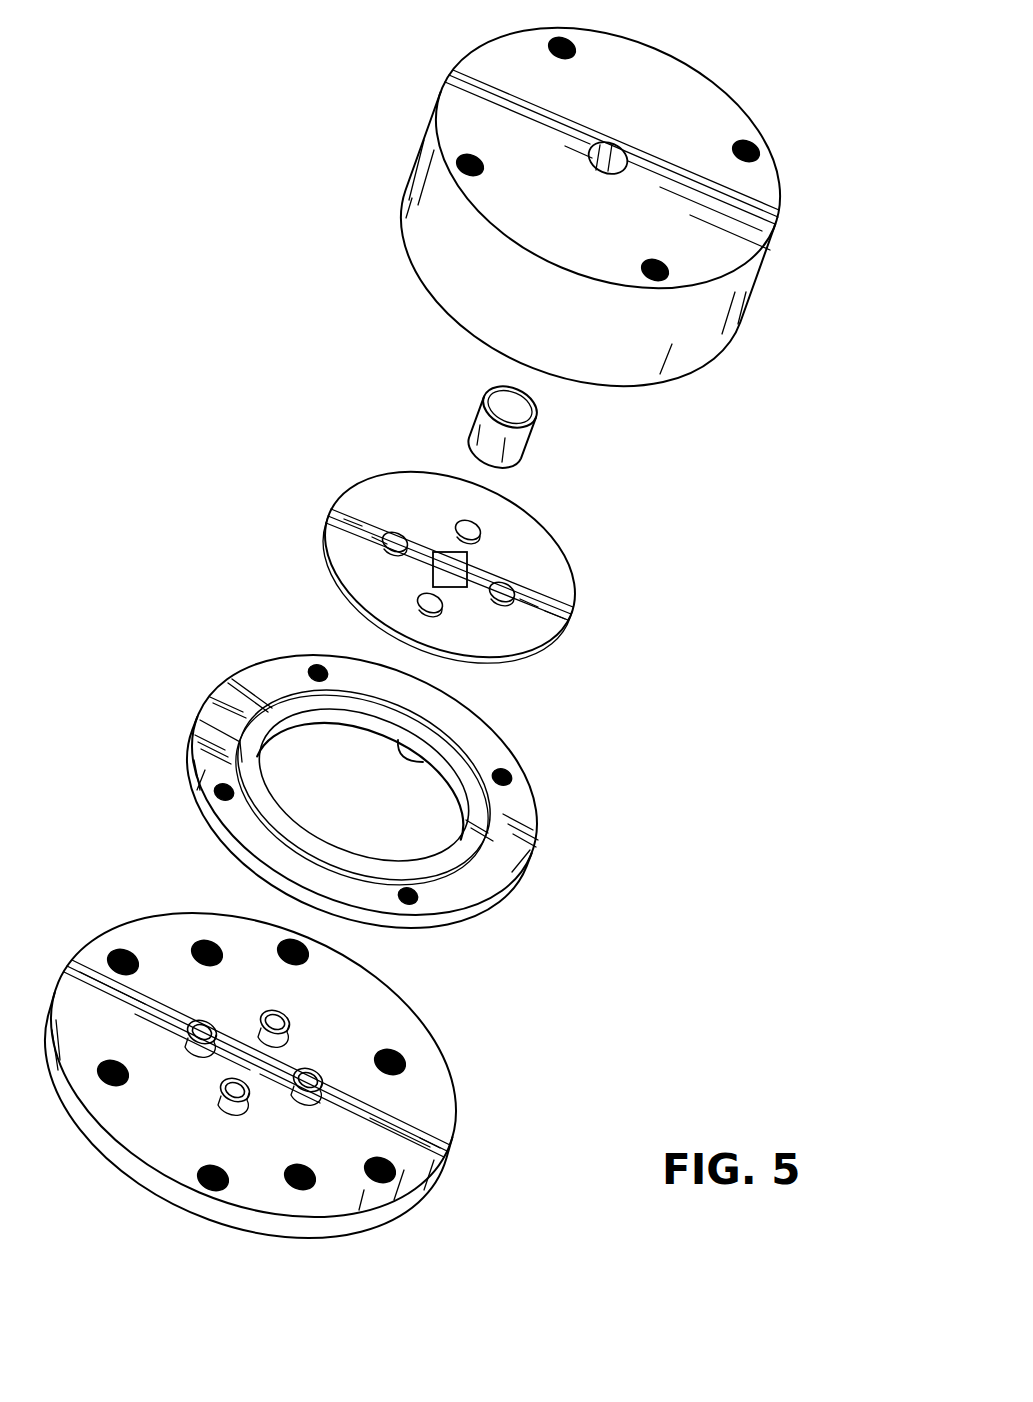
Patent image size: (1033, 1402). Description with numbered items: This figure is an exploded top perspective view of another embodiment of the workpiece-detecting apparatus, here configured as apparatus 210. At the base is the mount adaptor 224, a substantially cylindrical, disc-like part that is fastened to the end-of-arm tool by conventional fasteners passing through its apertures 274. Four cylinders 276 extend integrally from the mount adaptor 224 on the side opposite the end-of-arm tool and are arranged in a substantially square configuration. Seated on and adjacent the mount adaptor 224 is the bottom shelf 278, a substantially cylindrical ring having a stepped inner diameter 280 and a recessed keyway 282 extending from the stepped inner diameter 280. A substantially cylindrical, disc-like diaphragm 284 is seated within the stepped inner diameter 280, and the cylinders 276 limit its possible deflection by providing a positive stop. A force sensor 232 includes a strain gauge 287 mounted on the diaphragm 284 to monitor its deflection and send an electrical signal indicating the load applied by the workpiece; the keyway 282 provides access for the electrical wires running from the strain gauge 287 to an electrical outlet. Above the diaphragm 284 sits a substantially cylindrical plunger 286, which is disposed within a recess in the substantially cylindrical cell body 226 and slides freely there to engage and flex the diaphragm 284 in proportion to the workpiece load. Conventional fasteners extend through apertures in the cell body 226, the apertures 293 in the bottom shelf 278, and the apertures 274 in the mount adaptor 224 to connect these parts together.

The apparatus 210 is at (295, 388).
The cell body 226 is at (752, 288).
The plunger 286 is at (532, 454).
The force sensor 232 is at (648, 514).
The strain gauge 287 is at (467, 570).
The diaphragm 284 is at (493, 564).
The apertures 293 is at (318, 670).
The recessed keyway 282 is at (207, 707).
The stepped inner diameter 280 is at (425, 760).
The bottom shelf 278 is at (386, 766).
The apertures 274 is at (202, 948).
The cylinders 276 is at (313, 1072).
The mount adaptor 224 is at (291, 1061).